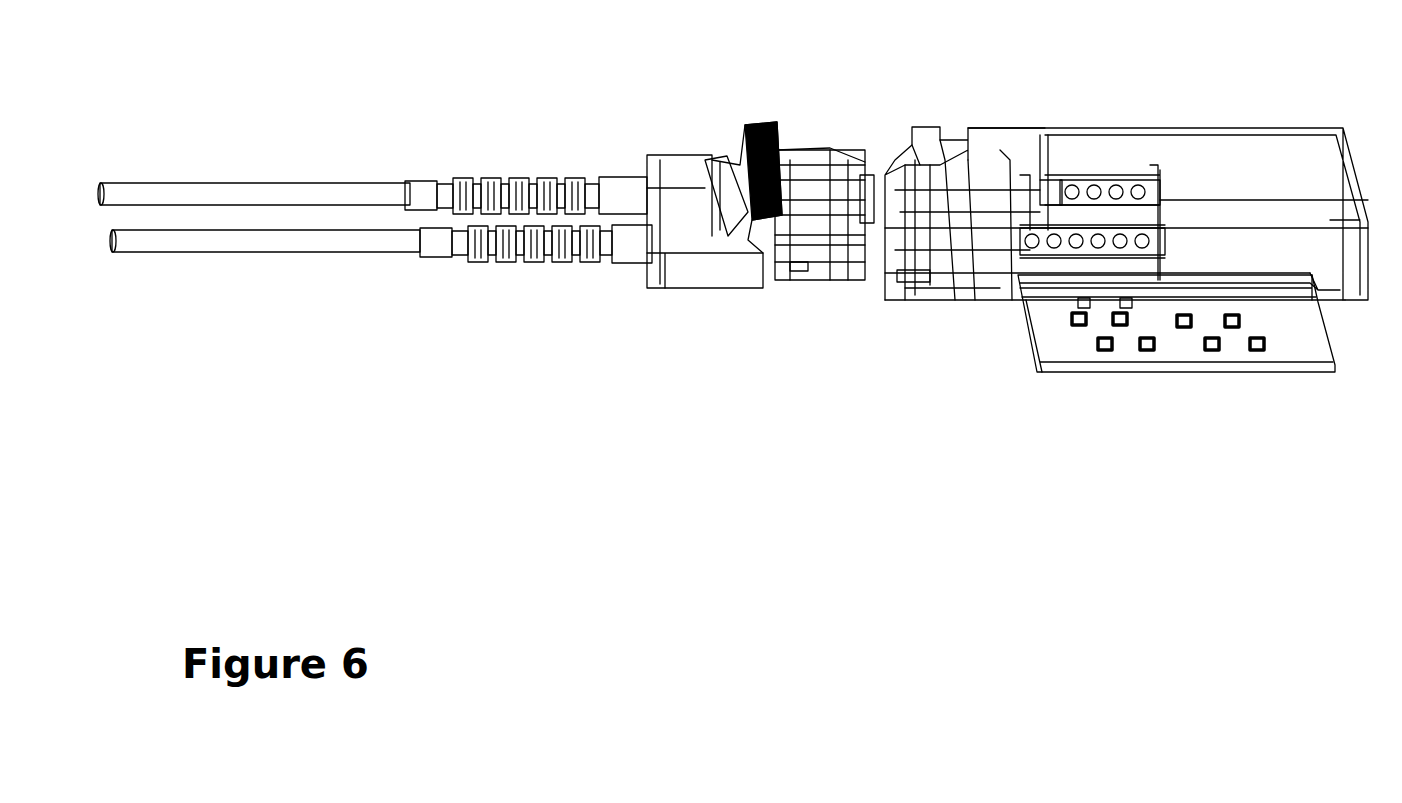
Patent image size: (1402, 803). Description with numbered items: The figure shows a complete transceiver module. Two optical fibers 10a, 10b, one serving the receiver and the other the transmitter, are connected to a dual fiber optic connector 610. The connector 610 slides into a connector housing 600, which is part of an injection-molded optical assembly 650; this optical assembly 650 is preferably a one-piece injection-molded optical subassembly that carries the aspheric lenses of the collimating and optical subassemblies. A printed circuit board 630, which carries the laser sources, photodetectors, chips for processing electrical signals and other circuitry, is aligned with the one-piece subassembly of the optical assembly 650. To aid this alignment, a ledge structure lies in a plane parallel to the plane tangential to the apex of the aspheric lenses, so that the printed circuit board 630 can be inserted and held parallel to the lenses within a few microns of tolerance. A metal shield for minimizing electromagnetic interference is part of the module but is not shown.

The optical fiber 10a is at (265, 187).
The optical fiber 10b is at (263, 249).
The dual fiber optic connector 610 is at (679, 173).
The connector housing 600 is at (950, 172).
The injection-molded optical assembly 650 is at (1360, 82).
The printed circuit board 630 is at (1045, 334).